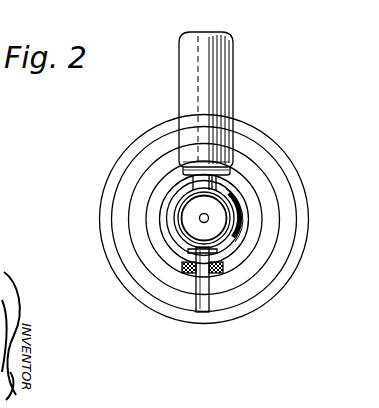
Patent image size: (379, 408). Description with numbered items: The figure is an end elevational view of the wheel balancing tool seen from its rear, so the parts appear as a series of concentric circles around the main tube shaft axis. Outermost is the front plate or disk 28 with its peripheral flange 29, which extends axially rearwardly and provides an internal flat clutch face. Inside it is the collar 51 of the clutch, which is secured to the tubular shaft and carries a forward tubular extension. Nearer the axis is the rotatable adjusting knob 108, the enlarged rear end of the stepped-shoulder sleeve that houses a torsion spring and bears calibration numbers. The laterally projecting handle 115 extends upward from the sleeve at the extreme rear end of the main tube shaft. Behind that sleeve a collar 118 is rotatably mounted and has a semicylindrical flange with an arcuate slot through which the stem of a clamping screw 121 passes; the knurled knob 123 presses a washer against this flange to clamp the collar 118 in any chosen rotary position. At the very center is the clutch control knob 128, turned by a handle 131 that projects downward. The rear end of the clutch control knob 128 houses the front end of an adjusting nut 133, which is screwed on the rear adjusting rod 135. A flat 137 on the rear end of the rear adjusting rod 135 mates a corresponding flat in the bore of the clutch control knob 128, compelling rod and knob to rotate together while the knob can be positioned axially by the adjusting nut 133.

The handle 115 is at (228, 67).
The collar 51 is at (153, 198).
The collar 118 is at (198, 217).
The rear adjusting rod 135 is at (197, 224).
The adjusting nut 133 is at (196, 229).
The knurled knob 123 is at (187, 273).
The handle 131 is at (203, 312).
The clamping screw 121 is at (224, 272).
The rotatable adjusting knob 108 is at (238, 246).
The peripheral flange 29 is at (306, 239).
The clutch control knob 128 is at (216, 218).
The front plate or disk 28 is at (302, 181).
The flat 137 is at (207, 216).